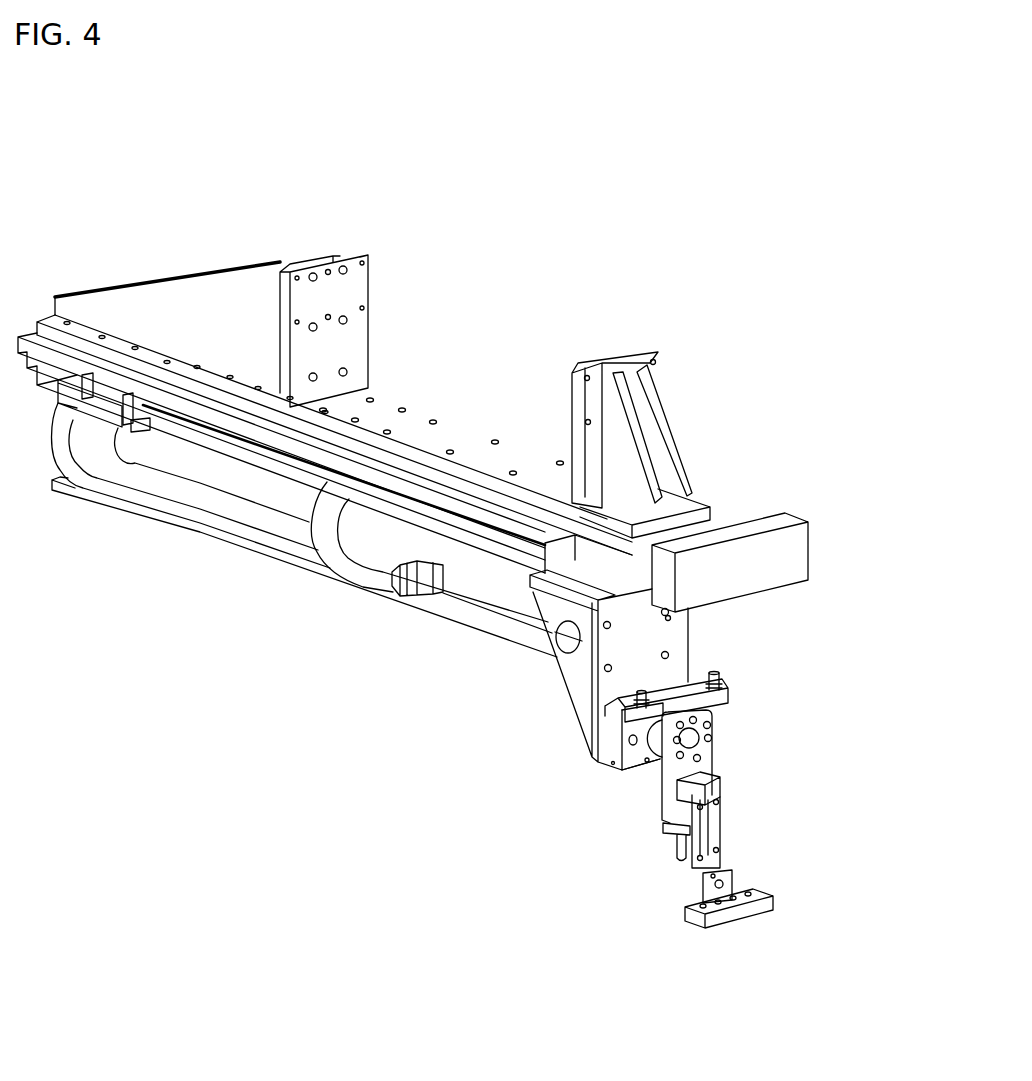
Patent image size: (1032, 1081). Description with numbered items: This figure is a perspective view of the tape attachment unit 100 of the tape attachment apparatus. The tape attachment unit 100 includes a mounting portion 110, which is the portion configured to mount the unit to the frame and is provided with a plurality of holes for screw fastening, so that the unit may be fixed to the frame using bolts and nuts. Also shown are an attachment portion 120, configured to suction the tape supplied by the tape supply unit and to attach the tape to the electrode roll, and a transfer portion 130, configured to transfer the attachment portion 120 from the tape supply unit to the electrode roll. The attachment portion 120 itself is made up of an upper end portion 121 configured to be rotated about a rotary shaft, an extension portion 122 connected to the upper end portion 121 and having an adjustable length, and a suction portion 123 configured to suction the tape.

The tape attachment unit 100 is at (84, 236).
The mounting portion 110 is at (458, 437).
The attachment portion 120 is at (852, 720).
The upper end portion 121 is at (714, 748).
The extension portion 122 is at (722, 817).
The suction portion 123 is at (772, 897).
The transfer portion 130 is at (290, 546).